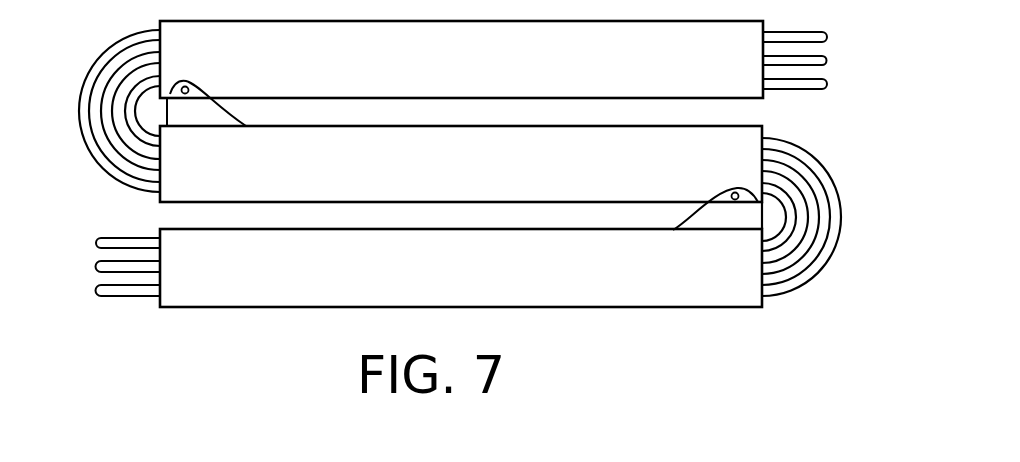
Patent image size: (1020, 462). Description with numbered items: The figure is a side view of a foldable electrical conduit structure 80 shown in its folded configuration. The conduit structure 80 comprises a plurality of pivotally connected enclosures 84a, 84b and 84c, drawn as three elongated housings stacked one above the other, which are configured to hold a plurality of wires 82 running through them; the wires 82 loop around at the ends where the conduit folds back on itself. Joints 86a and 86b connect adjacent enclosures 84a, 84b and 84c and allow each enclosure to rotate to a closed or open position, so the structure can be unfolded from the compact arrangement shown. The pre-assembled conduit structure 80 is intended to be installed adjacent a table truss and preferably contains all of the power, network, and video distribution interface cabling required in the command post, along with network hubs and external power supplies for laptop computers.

The foldable electrical conduit structure 80 is at (107, 349).
The wires 82 is at (843, 194).
The enclosure 84a is at (479, 66).
The enclosure 84b is at (479, 170).
The enclosure 84c is at (479, 275).
The joint 86a is at (193, 83).
The joint 86b is at (730, 191).